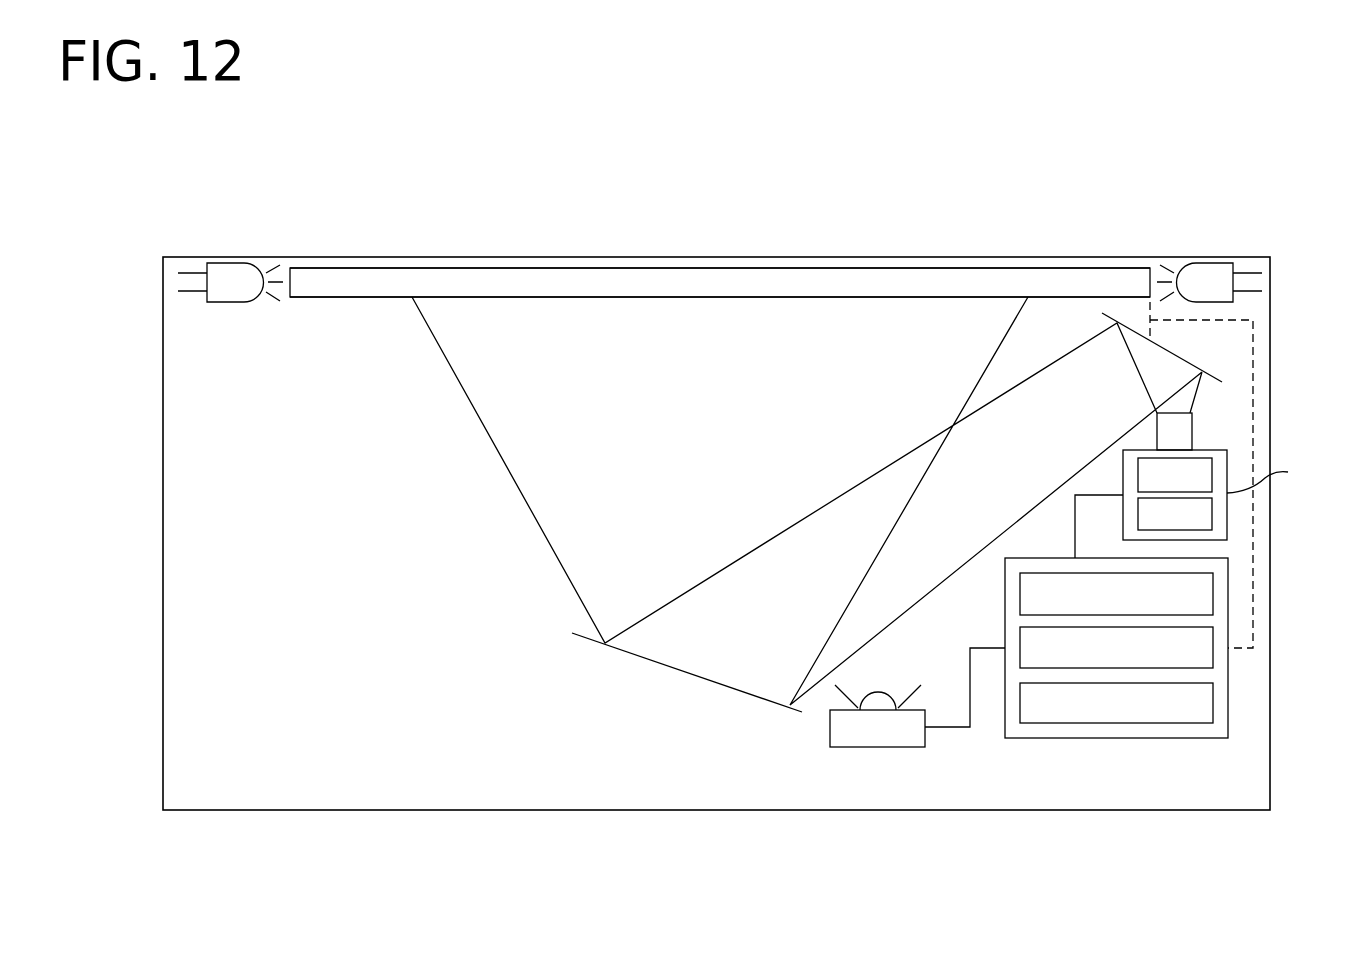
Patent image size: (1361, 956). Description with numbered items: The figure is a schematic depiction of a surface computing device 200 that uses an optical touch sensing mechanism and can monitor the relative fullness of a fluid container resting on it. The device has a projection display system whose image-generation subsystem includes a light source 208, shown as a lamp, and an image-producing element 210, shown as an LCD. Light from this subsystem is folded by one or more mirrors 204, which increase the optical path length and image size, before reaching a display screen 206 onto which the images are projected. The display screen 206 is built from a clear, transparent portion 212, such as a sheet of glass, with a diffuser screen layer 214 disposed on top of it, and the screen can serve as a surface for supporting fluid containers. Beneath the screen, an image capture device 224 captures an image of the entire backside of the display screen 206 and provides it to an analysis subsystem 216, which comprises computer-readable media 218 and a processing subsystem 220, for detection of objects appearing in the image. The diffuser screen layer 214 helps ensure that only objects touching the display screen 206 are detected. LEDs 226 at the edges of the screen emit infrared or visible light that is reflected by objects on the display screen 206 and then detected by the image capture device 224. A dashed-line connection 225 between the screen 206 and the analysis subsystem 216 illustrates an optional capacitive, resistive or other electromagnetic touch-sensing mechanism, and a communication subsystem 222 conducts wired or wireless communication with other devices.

The surface computing device 200 is at (140, 221).
The mirrors 204 is at (683, 675).
The display screen 206 is at (720, 267).
The light source 208 is at (1212, 513).
The image-producing element 210 is at (1212, 473).
The clear, transparent portion 212 is at (503, 287).
The diffuser screen layer 214 is at (548, 266).
The analysis subsystem 216 is at (1167, 682).
The computer-readable media 218 is at (1213, 595).
The processing subsystem 220 is at (1213, 655).
The communication subsystem 222 is at (1115, 723).
The image capture device 224 is at (876, 728).
The dashed-line connection 225 is at (1253, 393).
The LEDs 226 is at (233, 262).